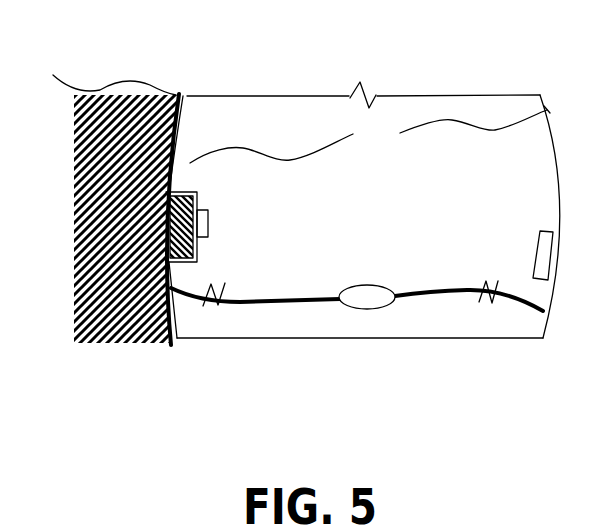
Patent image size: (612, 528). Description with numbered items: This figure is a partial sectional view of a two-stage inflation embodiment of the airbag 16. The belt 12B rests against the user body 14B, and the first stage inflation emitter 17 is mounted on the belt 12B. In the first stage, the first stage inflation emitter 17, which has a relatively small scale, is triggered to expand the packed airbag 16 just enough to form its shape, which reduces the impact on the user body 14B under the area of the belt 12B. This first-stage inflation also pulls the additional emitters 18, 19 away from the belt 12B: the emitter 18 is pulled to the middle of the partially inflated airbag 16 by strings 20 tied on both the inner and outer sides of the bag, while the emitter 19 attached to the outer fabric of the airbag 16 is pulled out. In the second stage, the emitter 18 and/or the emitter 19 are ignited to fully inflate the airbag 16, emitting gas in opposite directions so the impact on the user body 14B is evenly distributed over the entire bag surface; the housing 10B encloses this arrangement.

The housing 10B is at (208, 130).
The belt 12B is at (175, 222).
The user body 14B is at (133, 118).
The airbag 16 is at (370, 134).
The first stage inflation emitter 17 is at (208, 220).
The emitter 18 is at (357, 292).
The emitter 19 is at (535, 250).
The strings 20 is at (443, 295).